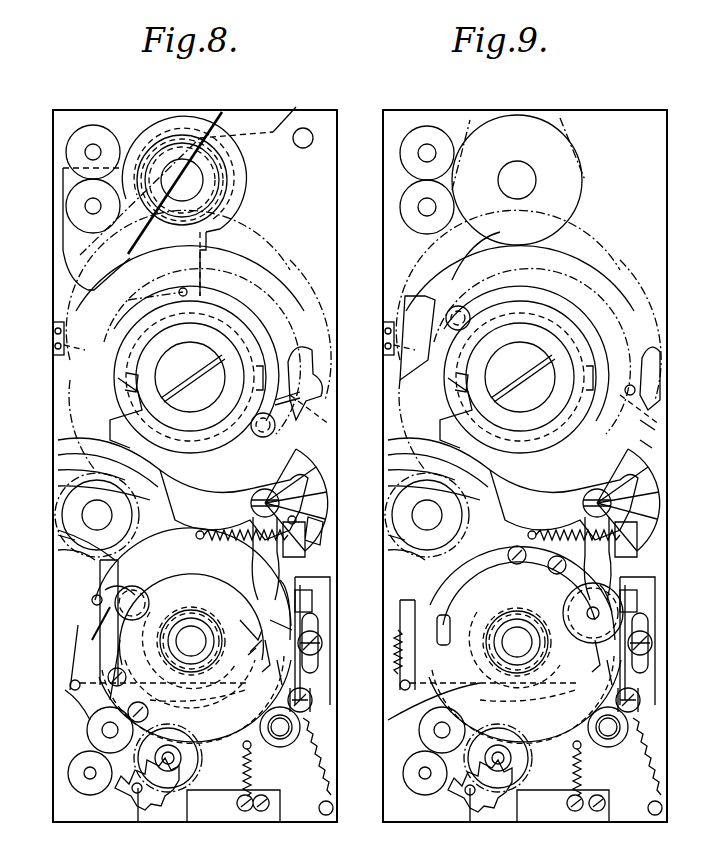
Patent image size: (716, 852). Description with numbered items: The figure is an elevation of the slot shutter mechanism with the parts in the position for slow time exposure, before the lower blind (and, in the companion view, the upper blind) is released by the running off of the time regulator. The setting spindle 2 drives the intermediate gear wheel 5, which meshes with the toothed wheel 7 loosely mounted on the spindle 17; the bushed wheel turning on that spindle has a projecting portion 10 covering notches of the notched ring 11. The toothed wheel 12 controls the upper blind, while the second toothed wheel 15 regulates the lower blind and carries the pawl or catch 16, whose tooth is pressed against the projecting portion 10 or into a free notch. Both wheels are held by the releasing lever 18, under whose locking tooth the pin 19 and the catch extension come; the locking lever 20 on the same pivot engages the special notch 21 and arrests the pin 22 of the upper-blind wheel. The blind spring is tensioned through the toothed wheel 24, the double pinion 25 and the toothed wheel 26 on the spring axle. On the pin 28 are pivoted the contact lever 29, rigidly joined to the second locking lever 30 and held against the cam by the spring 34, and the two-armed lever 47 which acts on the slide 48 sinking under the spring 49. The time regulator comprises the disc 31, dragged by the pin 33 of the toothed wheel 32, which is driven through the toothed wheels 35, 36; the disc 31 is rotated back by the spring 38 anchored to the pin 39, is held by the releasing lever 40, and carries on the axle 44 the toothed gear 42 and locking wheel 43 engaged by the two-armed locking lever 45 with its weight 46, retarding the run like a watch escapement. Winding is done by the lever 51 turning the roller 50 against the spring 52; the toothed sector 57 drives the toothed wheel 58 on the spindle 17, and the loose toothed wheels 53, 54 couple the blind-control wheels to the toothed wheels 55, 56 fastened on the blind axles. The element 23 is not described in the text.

In FIG. 8, the spindle 2 is at (191, 641).
In FIG. 9, the spindle 2 is at (517, 642).
In FIG. 8, the intermediate gear wheel 5 is at (320, 430).
In FIG. 9, the intermediate gear wheel 5 is at (650, 445).
In FIG. 8, the toothed wheel 7 is at (245, 305).
In FIG. 9, the toothed wheel 7 is at (568, 304).
In FIG. 8, the projecting portion 10 is at (150, 345).
In FIG. 9, the projecting portion 10 is at (578, 360).
In FIG. 8, the notched ring 11 is at (188, 377).
In FIG. 9, the notched ring 11 is at (520, 377).
In FIG. 8, the toothed wheel 12 is at (268, 265).
In FIG. 9, the toothed wheel 12 is at (586, 268).
In FIG. 8, the second toothed wheel 15 is at (288, 280).
In FIG. 9, the second toothed wheel 15 is at (616, 281).
In FIG. 8, the pawl or catch 16 is at (194, 375).
In FIG. 9, the pawl or catch 16 is at (440, 370).
In FIG. 8, the spindle 17 is at (198, 355).
In FIG. 9, the spindle 17 is at (538, 358).
In FIG. 8, the releasing lever 18 is at (305, 405).
In FIG. 9, the releasing lever 18 is at (655, 432).
In FIG. 8, the pin 19 is at (318, 388).
In FIG. 9, the pin 19 is at (636, 392).
In FIG. 8, the locking lever 20 is at (234, 505).
In FIG. 9, the locking lever 20 is at (560, 505).
In FIG. 8, the special notch 21 is at (125, 405).
In FIG. 9, the special notch 21 is at (455, 410).
In FIG. 8, the pin 22 is at (58, 469).
In FIG. 9, the pin 22 is at (388, 471).
In FIG. 8, the bracket 23 is at (58, 356).
In FIG. 9, the bracket 23 is at (388, 358).
In FIG. 8, the toothed wheel 24 is at (198, 750).
In FIG. 9, the toothed wheel 24 is at (528, 750).
In FIG. 8, the double pinion 25 is at (88, 735).
In FIG. 8, the toothed wheel 26 is at (70, 770).
In FIG. 9, the toothed wheel 26 is at (403, 771).
In FIG. 8, the pin 28 is at (283, 740).
In FIG. 9, the pin 28 is at (611, 740).
In FIG. 8, the contact lever 29 is at (210, 562).
In FIG. 8, the second locking lever 30 is at (265, 670).
In FIG. 9, the second locking lever 30 is at (595, 672).
In FIG. 8, the disc 31 is at (165, 580).
In FIG. 9, the disc 31 is at (425, 740).
In FIG. 8, the toothed wheel 32 is at (112, 530).
In FIG. 8, the pin 33 is at (246, 660).
In FIG. 9, the pin 33 is at (430, 682).
In FIG. 8, the spring 34 is at (258, 768).
In FIG. 9, the spring 34 is at (589, 768).
In FIG. 8, the toothed wheel 35 is at (58, 538).
In FIG. 9, the toothed wheel 35 is at (420, 556).
In FIG. 8, the toothed wheel 36 is at (62, 513).
In FIG. 9, the toothed wheel 36 is at (462, 512).
In FIG. 8, the spring 38 is at (178, 598).
In FIG. 9, the spring 38 is at (472, 652).
In FIG. 8, the pin 39 is at (70, 684).
In FIG. 9, the pin 39 is at (415, 668).
In FIG. 8, the releasing lever 40 is at (98, 556).
In FIG. 9, the releasing lever 40 is at (400, 600).
In FIG. 8, the toothed gear 42 is at (134, 590).
In FIG. 9, the toothed gear 42 is at (593, 613).
In FIG. 8, the locking wheel 43 is at (100, 590).
In FIG. 9, the locking wheel 43 is at (628, 568).
In FIG. 8, the axle 44 is at (120, 610).
In FIG. 9, the axle 44 is at (620, 630).
In FIG. 8, the two-armed locking lever 45 is at (92, 604).
In FIG. 8, the weight 46 is at (312, 700).
In FIG. 9, the weight 46 is at (450, 625).
In FIG. 8, the two-armed lever 47 is at (178, 702).
In FIG. 9, the two-armed lever 47 is at (510, 702).
In FIG. 8, the slide 48 is at (320, 630).
In FIG. 9, the slide 48 is at (650, 660).
In FIG. 8, the spring 49 is at (318, 760).
In FIG. 9, the spring 49 is at (650, 775).
In FIG. 8, the roller 50 is at (195, 184).
In FIG. 9, the roller 50 is at (530, 178).
In FIG. 8, the lever 51 is at (88, 270).
In FIG. 8, the spring 52 is at (256, 118).
In FIG. 8, the loose toothed wheel 53 is at (222, 104).
In FIG. 9, the loose toothed wheel 53 is at (528, 115).
In FIG. 8, the loose toothed wheel 54 is at (190, 214).
In FIG. 9, the loose toothed wheel 54 is at (550, 125).
In FIG. 8, the toothed wheel 55 is at (75, 141).
In FIG. 9, the toothed wheel 55 is at (405, 141).
In FIG. 8, the toothed wheel 56 is at (70, 193).
In FIG. 9, the toothed wheel 56 is at (400, 195).
In FIG. 8, the toothed sector 57 is at (200, 275).
In FIG. 8, the toothed wheel 58 is at (300, 352).